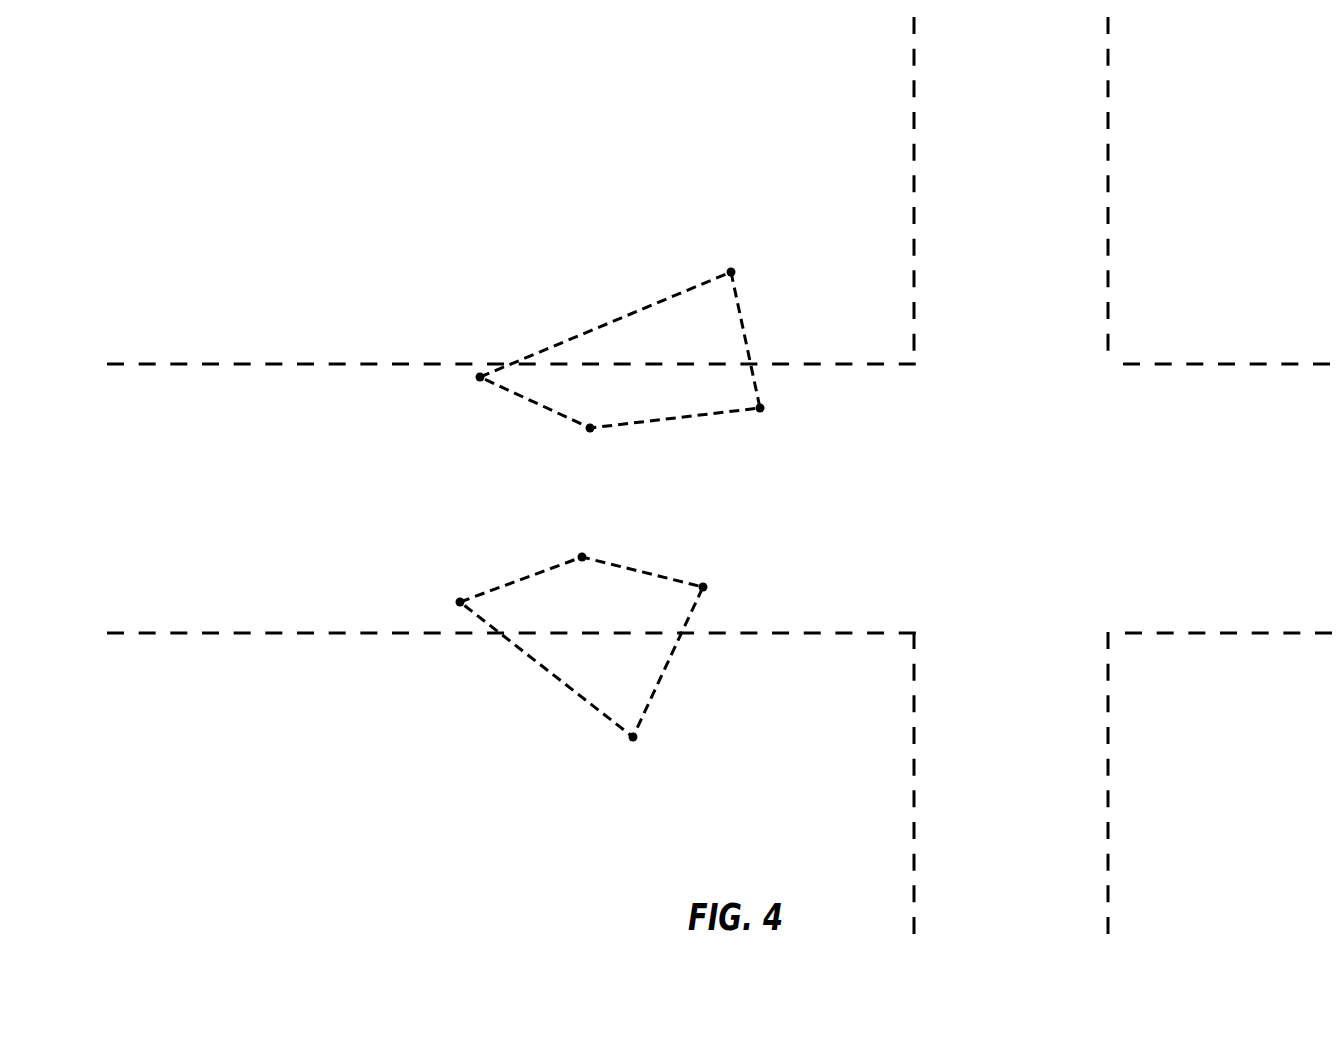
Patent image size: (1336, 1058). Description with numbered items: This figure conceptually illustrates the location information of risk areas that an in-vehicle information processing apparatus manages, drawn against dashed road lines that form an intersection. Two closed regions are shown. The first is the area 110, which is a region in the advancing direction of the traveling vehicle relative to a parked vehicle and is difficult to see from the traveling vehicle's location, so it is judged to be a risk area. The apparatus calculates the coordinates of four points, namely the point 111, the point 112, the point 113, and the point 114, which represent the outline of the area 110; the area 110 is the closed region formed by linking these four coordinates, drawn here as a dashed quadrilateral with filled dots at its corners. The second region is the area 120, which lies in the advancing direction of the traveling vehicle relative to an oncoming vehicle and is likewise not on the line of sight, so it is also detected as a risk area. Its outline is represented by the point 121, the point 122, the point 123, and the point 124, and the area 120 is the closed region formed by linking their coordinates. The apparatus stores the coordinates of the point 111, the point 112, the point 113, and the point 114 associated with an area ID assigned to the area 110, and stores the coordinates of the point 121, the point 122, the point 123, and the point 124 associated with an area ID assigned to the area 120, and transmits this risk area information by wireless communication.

The area 110 is at (742, 333).
The point 111 is at (480, 381).
The point 112 is at (590, 432).
The point 113 is at (760, 412).
The point 114 is at (731, 268).
The area 120 is at (577, 697).
The point 121 is at (582, 553).
The point 122 is at (460, 598).
The point 123 is at (633, 741).
The point 124 is at (703, 583).